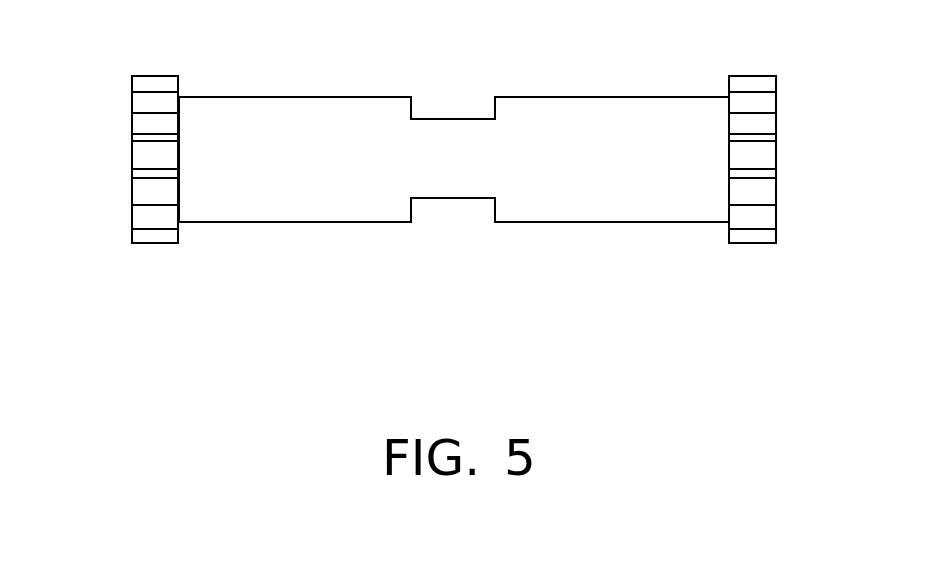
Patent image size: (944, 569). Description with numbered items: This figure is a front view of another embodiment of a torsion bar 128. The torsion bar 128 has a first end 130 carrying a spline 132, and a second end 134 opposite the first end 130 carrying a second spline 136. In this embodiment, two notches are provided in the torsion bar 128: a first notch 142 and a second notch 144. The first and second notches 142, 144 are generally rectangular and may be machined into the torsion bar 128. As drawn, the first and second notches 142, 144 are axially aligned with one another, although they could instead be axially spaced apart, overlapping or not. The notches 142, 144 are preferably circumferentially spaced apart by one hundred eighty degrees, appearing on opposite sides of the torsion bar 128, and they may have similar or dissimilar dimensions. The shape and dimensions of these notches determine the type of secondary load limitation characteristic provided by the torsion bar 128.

The torsion bar 128 is at (363, 205).
The first end 130 is at (195, 207).
The spline 132 is at (142, 190).
The second end 134 is at (697, 207).
The spline 136 is at (762, 190).
The first notch 142 is at (437, 119).
The second notch 144 is at (455, 198).